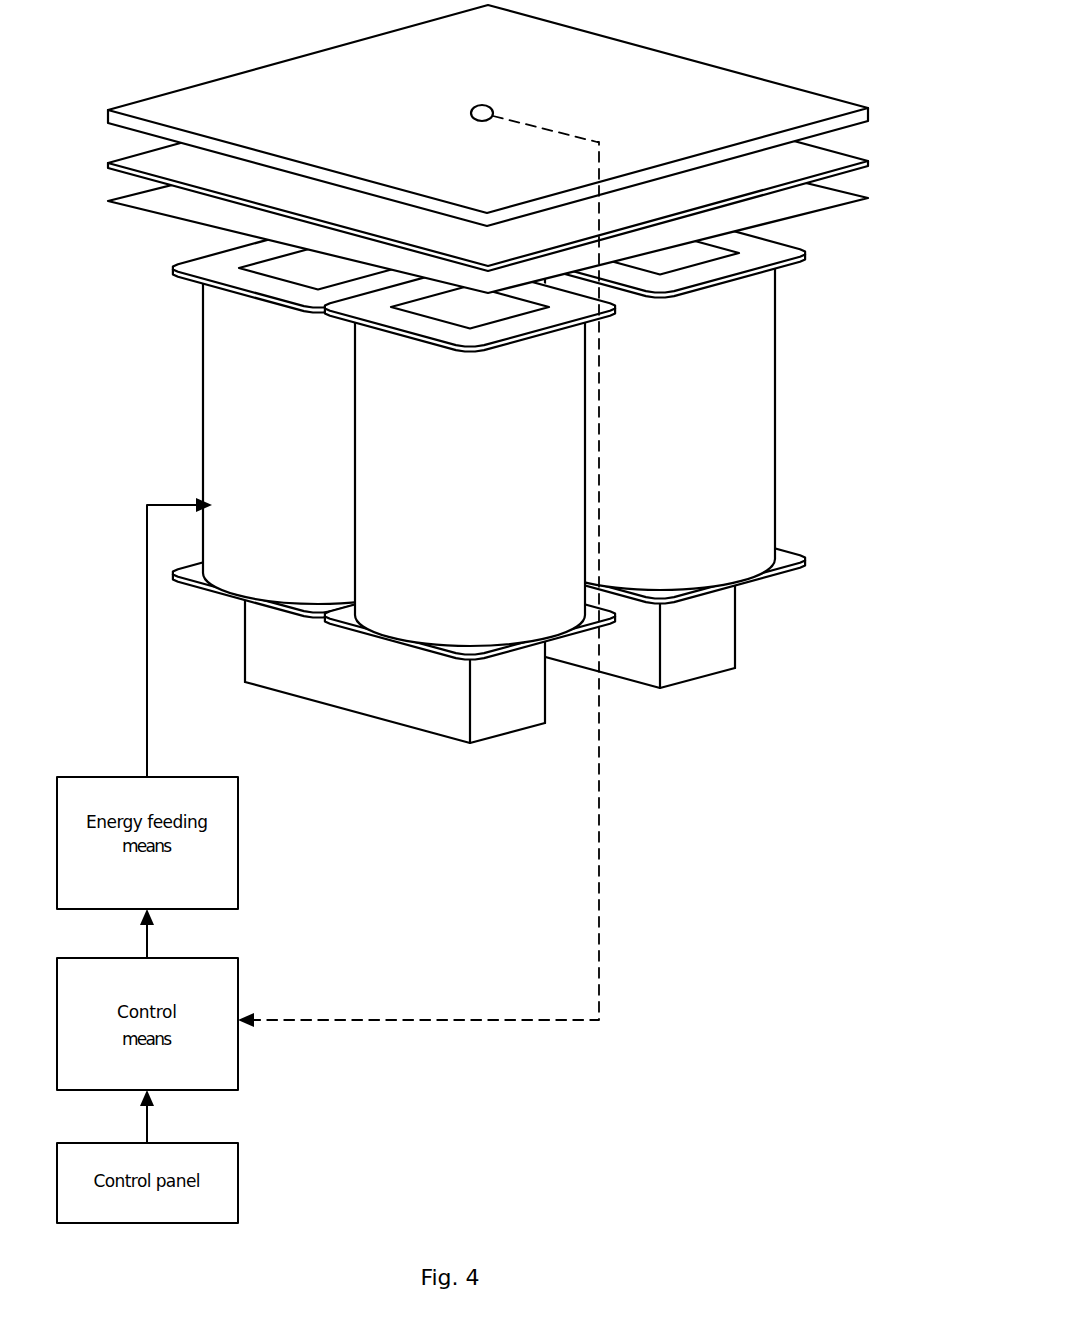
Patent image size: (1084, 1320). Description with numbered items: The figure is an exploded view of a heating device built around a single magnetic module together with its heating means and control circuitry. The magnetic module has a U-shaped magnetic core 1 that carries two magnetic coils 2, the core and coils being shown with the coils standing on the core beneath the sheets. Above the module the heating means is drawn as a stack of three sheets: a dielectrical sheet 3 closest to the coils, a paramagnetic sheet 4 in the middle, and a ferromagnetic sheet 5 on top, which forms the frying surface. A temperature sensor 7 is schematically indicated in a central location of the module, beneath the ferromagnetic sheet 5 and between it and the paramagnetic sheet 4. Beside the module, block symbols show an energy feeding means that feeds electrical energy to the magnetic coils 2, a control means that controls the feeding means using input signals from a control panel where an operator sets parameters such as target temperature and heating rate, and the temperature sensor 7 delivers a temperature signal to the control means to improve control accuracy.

The U-shaped magnetic core 1 is at (707, 635).
The magnetic coil 2 is at (741, 412).
The dielectrical sheet 3 is at (810, 198).
The paramagnetic sheet 4 is at (825, 162).
The ferromagnetic sheet 5 is at (782, 102).
The temperature sensor 7 is at (493, 115).